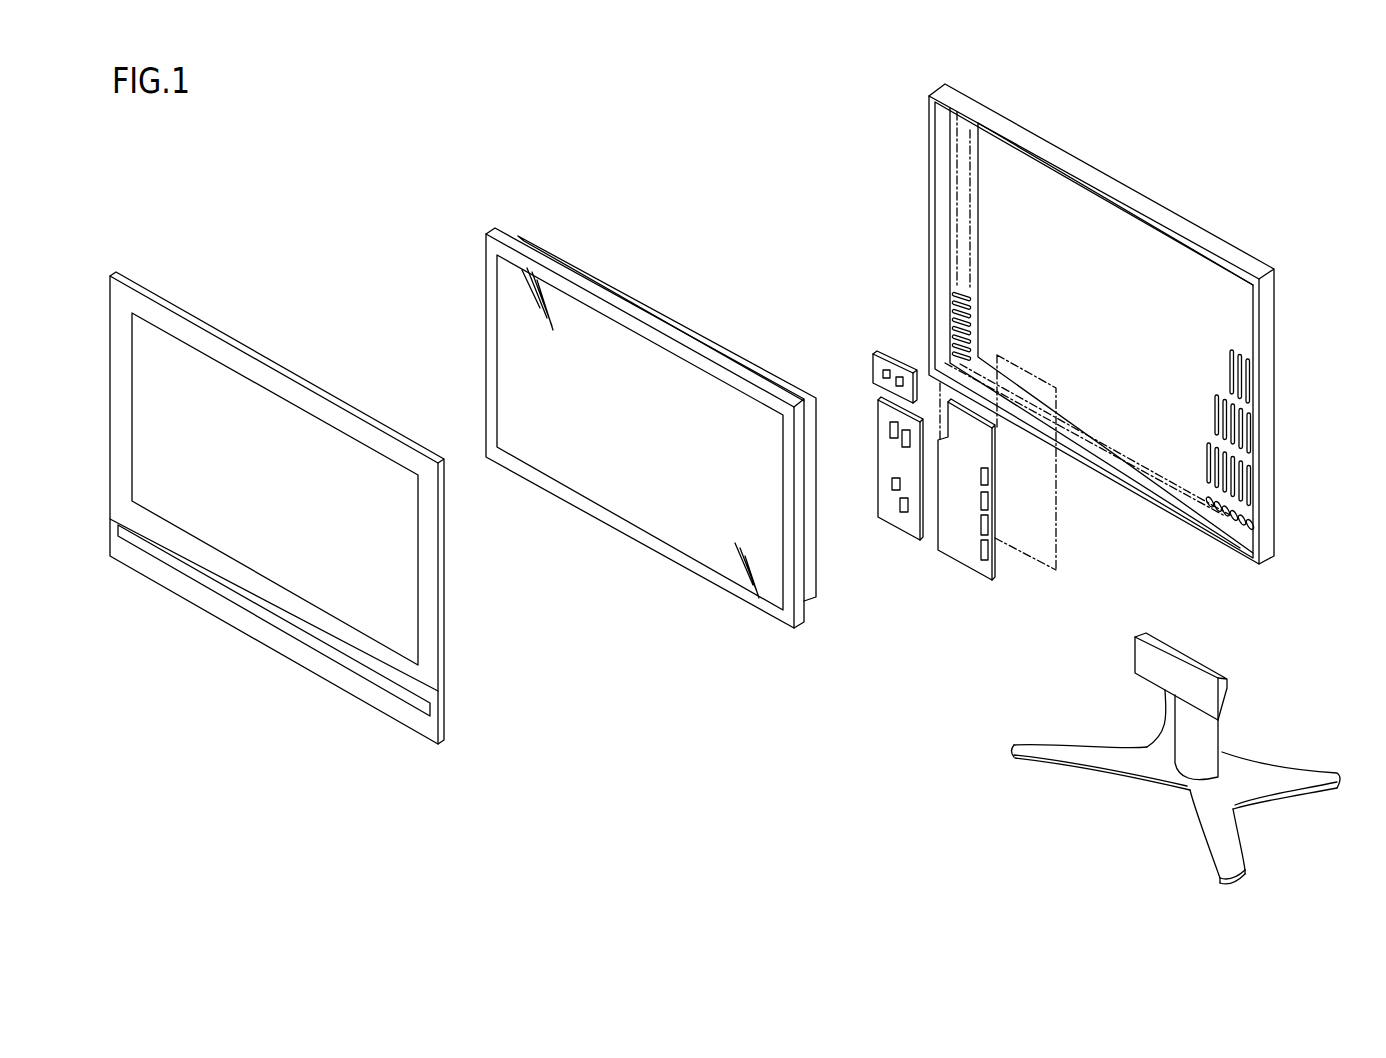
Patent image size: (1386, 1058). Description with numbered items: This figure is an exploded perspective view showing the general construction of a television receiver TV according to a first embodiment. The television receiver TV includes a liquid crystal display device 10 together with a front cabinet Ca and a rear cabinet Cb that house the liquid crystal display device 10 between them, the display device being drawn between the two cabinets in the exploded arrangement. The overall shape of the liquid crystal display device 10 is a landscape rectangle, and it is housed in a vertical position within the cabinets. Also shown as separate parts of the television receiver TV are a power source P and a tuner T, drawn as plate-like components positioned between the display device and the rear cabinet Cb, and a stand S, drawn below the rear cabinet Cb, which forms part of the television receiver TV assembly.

The television receiver TV is at (674, 155).
The front cabinet Ca is at (260, 357).
The liquid crystal display device 10 is at (594, 274).
The rear cabinet Cb is at (1096, 167).
The tuner T is at (892, 527).
The power source P is at (960, 567).
The stand S is at (1087, 773).